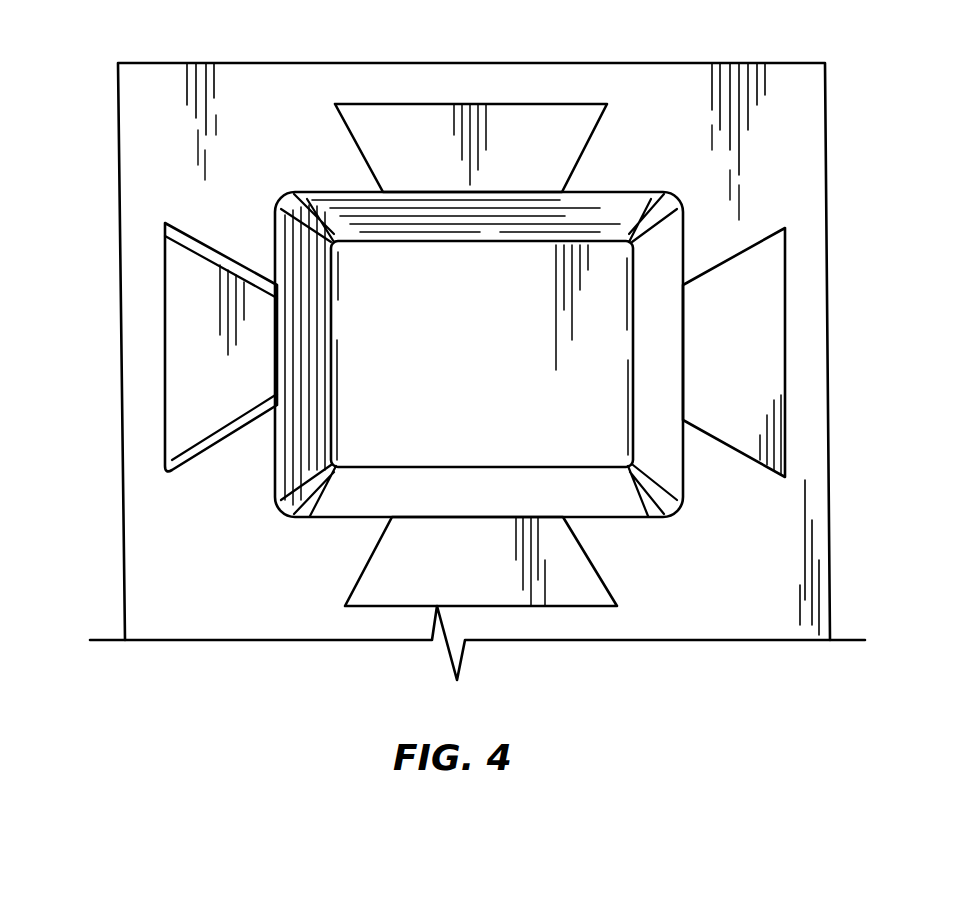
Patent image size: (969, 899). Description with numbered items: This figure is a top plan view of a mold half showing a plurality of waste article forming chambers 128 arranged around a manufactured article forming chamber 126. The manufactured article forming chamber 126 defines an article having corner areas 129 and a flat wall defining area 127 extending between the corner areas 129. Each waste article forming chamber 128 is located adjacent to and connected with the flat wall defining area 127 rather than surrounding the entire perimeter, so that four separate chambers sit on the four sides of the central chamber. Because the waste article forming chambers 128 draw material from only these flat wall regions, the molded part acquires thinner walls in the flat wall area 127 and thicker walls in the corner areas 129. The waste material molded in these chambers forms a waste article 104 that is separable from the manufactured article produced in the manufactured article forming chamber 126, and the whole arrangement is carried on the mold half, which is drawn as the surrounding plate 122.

The waste article 104 is at (504, 354).
The plate 122 is at (795, 157).
The manufactured article forming chamber 126 is at (508, 349).
The flat wall defining area 127 is at (331, 323).
The waste article forming chambers 128 is at (516, 130).
The corner areas 129 is at (657, 231).